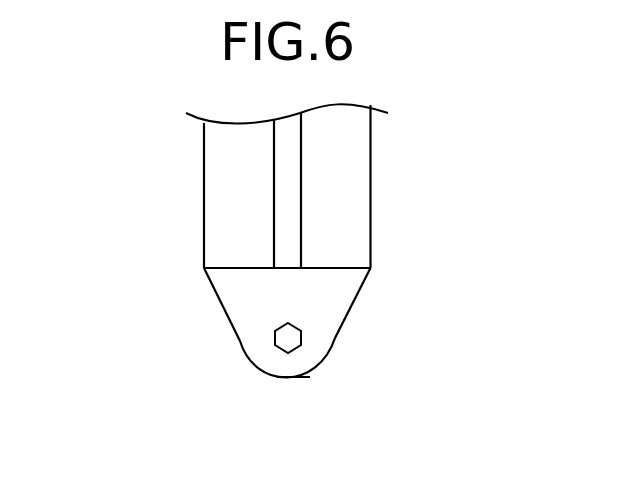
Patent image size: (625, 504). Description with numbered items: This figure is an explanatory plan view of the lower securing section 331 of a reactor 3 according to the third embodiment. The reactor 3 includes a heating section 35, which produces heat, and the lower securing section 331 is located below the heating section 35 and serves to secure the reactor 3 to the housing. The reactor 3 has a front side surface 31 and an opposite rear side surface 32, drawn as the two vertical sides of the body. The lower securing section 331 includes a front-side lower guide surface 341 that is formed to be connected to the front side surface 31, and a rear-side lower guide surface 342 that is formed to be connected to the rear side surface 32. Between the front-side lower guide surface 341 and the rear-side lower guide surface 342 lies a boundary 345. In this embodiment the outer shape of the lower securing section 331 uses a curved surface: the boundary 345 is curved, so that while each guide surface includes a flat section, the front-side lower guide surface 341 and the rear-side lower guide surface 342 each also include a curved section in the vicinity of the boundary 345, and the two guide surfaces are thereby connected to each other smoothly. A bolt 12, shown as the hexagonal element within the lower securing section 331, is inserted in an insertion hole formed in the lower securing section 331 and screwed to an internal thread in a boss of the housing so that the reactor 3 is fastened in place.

The reactor 3 is at (186, 144).
The front side surface 31 is at (204, 188).
The rear side surface 32 is at (371, 190).
The heating section 35 is at (340, 133).
The front-side lower guide surface 341 is at (233, 332).
The rear-side lower guide surface 342 is at (348, 323).
The lower securing section 331 is at (262, 347).
The boundary 345 is at (295, 378).
The bolt 12 is at (288, 335).